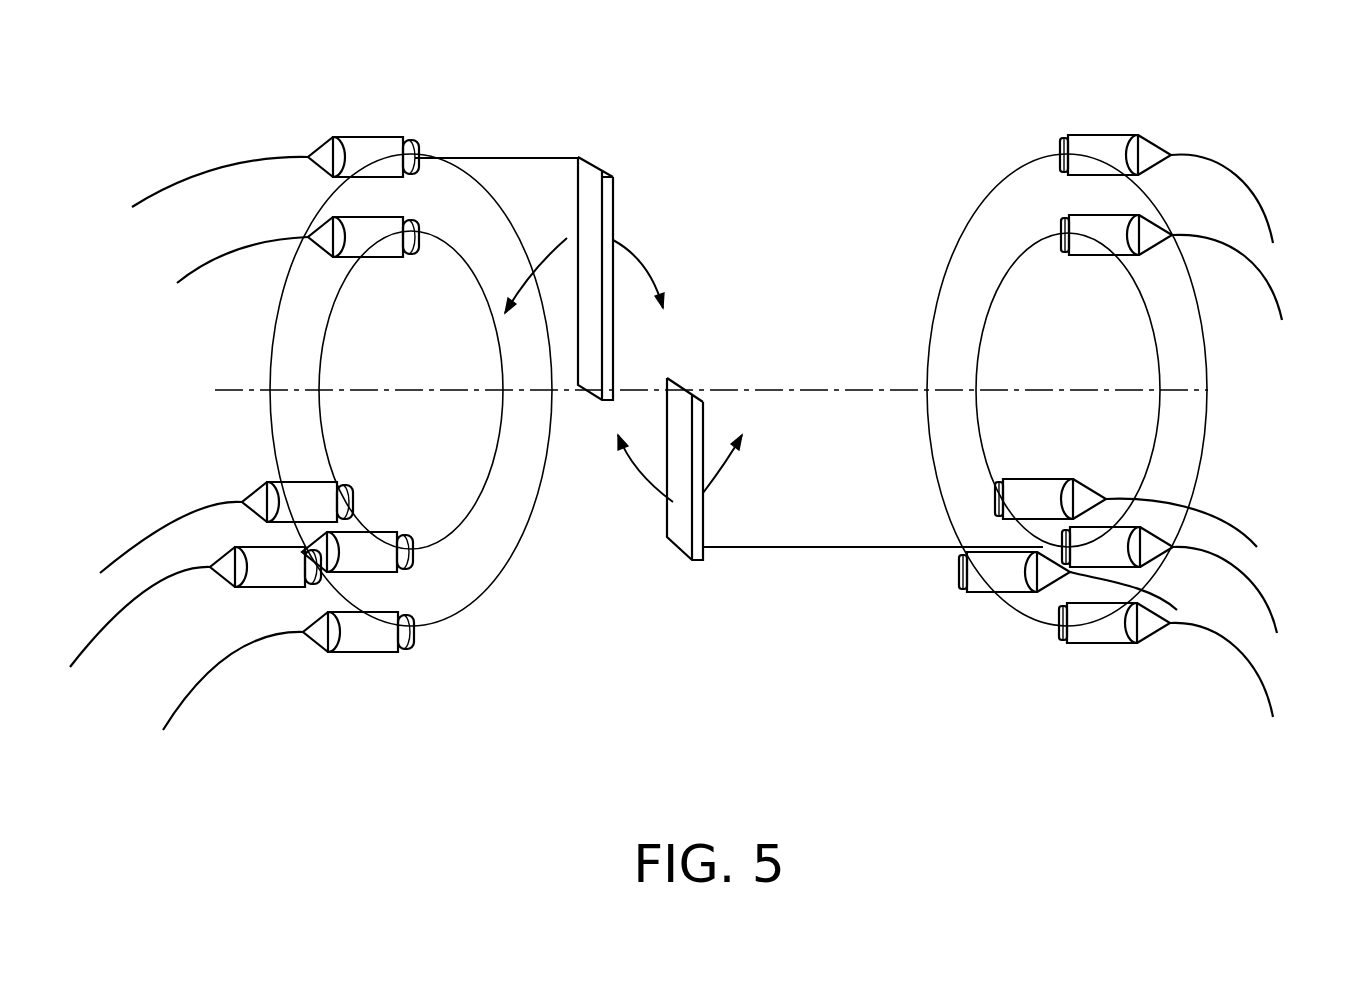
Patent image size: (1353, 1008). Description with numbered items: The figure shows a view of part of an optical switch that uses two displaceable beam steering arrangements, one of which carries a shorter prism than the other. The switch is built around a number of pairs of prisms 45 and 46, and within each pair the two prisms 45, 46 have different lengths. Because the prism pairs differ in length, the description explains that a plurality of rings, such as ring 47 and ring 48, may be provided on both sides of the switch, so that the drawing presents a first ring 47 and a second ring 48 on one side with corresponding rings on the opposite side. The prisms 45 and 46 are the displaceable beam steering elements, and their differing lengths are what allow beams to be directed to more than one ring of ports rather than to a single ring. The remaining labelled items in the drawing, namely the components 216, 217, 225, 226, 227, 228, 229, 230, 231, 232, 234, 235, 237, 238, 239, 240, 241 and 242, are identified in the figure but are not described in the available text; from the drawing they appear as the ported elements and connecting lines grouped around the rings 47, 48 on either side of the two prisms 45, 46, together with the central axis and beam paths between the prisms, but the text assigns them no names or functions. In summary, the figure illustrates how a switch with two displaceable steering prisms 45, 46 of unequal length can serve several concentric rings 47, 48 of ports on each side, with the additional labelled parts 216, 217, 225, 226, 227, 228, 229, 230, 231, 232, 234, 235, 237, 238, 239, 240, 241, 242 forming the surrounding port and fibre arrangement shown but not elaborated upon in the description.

The prism 45 is at (580, 157).
The prism 46 is at (690, 563).
The ring 47 is at (270, 370).
The ring 48 is at (320, 367).
The light source 216 is at (348, 137).
The light source 217 is at (1090, 135).
The optical axis 225 is at (790, 390).
The light receiving unit 226 is at (1105, 645).
The light receiving unit 227 is at (347, 647).
The light receiving unit 228 is at (1000, 578).
The light receiving unit 229 is at (243, 577).
The optical fiber 230 is at (1070, 572).
The outer ring 231 is at (322, 390).
The outer ring 232 is at (1208, 370).
The light receiving unit 234 is at (263, 488).
The light receiving unit 235 is at (382, 563).
The light receiving unit 237 is at (1067, 568).
The light beam 238 is at (488, 157).
The inner ring 239 is at (300, 390).
The inner ring 240 is at (1157, 323).
The optical fiber 241 is at (1142, 212).
The optical fiber 242 is at (337, 210).